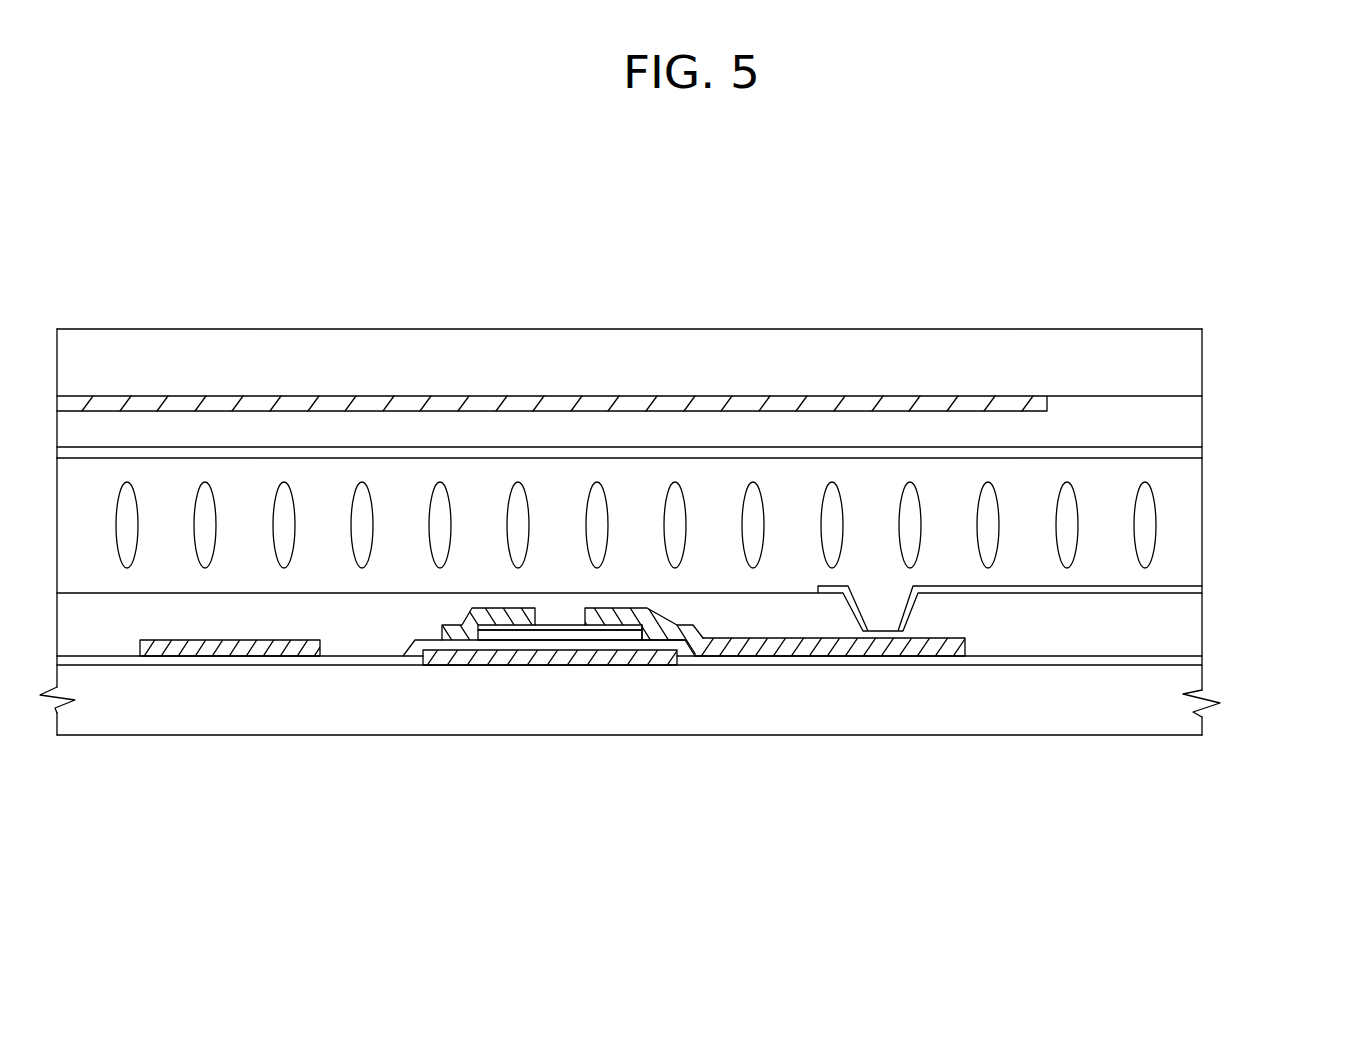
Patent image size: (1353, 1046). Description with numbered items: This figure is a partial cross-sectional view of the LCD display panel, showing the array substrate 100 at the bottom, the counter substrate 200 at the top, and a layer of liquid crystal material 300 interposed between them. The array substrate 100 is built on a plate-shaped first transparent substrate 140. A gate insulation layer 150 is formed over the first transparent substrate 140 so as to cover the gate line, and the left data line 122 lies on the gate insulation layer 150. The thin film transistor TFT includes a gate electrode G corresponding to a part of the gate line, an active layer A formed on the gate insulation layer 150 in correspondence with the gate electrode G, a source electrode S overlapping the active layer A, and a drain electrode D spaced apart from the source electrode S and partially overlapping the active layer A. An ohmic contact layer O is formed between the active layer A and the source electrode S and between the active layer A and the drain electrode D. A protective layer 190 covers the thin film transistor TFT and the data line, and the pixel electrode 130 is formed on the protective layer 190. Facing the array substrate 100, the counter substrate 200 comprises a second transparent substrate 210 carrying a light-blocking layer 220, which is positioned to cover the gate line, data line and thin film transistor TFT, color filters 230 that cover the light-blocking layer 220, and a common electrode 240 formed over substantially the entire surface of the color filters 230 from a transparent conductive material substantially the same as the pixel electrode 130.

The array substrate 100 is at (1292, 582).
The left data line 122 is at (230, 650).
The pixel electrode 130 is at (1192, 590).
The first transparent substrate 140 is at (1192, 715).
The gate insulation layer 150 is at (1192, 660).
The protective layer 190 is at (1192, 625).
The counter substrate 200 is at (1294, 360).
The second transparent substrate 210 is at (1192, 369).
The light-blocking layer 220 is at (1047, 403).
The color filters 230 is at (1192, 427).
The common electrode 240 is at (1192, 453).
The liquid crystal material 300 is at (1170, 532).
The source electrode S is at (455, 618).
The active layer A is at (497, 637).
The gate electrode G is at (528, 662).
The ohmic contact layer O is at (597, 627).
The drain electrode D is at (632, 617).
The thin film transistor TFT is at (643, 805).